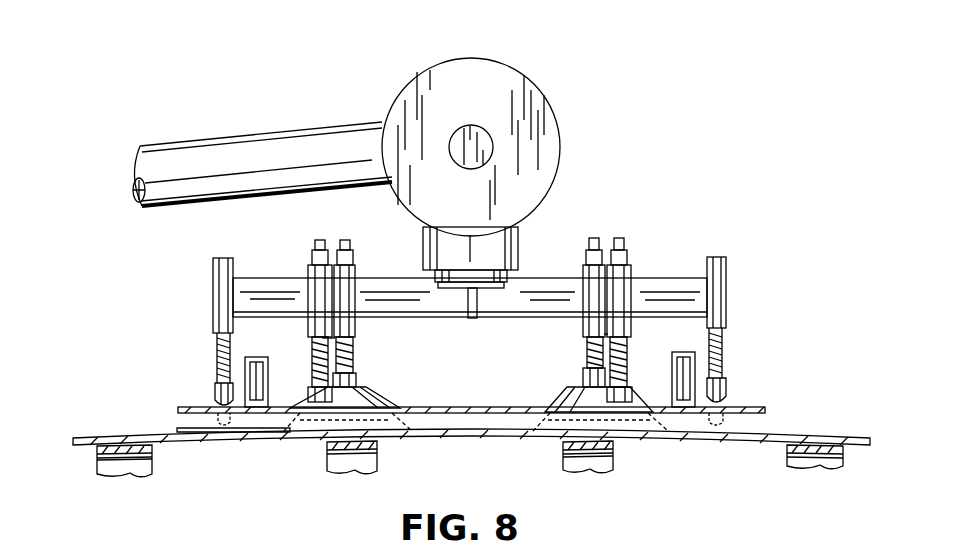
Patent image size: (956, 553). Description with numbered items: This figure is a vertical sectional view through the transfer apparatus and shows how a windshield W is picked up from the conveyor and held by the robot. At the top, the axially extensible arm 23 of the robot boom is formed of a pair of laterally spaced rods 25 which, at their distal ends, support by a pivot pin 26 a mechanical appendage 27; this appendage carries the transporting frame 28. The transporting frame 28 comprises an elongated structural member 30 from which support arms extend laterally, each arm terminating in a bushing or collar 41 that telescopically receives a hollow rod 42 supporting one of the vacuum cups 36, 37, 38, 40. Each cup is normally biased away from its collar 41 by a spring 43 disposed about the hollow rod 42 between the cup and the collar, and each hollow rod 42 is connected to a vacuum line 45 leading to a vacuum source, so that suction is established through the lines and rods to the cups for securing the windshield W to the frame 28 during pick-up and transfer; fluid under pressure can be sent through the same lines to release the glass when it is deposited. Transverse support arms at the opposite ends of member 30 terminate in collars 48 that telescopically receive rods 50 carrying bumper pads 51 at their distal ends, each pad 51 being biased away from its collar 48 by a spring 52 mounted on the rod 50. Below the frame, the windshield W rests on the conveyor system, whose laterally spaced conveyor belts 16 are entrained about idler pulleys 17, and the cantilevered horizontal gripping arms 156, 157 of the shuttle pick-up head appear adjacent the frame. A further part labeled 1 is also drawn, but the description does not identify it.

The axially extensible arm 23 is at (288, 128).
The rods 25 is at (190, 154).
The pivot pin 26 is at (472, 130).
The mechanical appendage 27 is at (515, 238).
The transporting frame 28 is at (682, 268).
The elongated structural member 30 is at (492, 302).
The vacuum cup 36 is at (378, 400).
The vacuum cup 37 is at (562, 396).
The vacuum cup 38 is at (622, 418).
The vacuum cup 40 is at (315, 416).
The collar 41 is at (313, 280).
The hollow rod 42 is at (313, 370).
The spring 43 is at (328, 336).
The vacuum line 45 is at (345, 240).
The collars 48 is at (216, 272).
The rods 50 is at (219, 369).
The bumper pads 51 is at (214, 393).
The spring 52 is at (218, 346).
The gripping arm 156 is at (690, 413).
The gripping arm 157 is at (250, 413).
The rail 1 is at (439, 407).
The conveyor belts 16 is at (98, 460).
The idler pulleys 17 is at (124, 468).
The windshield W is at (487, 443).